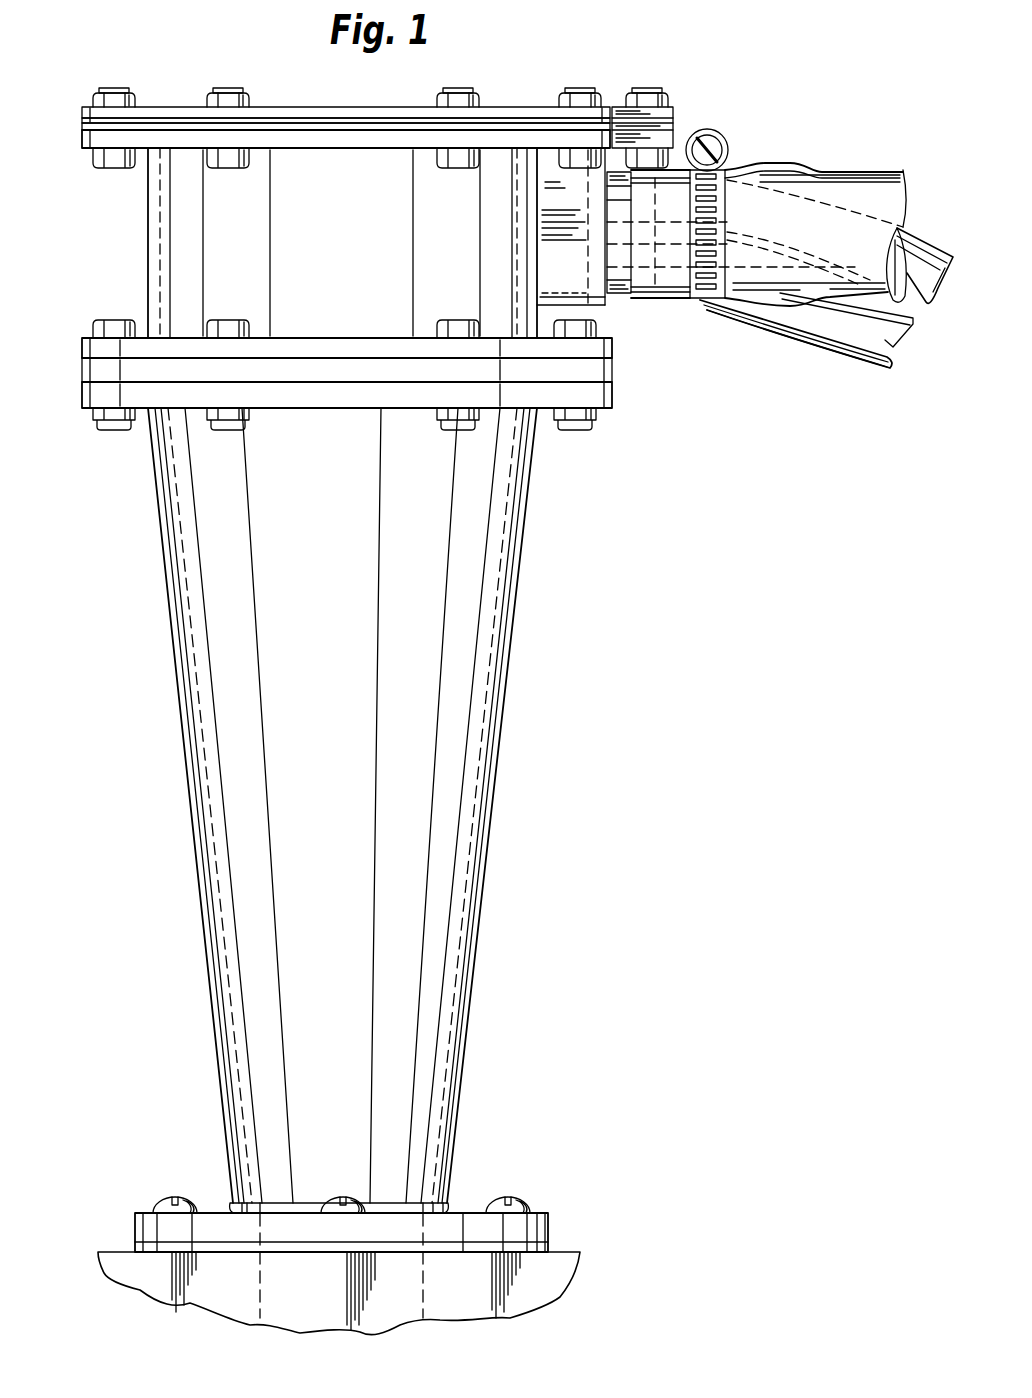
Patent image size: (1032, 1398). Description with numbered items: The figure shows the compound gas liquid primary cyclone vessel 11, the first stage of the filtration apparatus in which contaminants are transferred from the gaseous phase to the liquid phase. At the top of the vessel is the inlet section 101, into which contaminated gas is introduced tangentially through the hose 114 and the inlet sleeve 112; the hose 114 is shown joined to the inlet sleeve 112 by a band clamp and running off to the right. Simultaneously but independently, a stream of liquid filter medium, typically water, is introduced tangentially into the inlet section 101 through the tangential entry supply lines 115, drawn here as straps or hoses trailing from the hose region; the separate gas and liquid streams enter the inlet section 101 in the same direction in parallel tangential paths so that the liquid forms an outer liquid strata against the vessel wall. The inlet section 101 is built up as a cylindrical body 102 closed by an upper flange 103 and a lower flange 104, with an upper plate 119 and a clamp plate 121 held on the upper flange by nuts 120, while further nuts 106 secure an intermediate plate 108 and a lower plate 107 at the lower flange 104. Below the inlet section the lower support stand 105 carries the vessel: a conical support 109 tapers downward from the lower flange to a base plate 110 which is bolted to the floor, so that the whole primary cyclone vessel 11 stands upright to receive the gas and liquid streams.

The compound gas liquid primary cyclone vessel 11 is at (533, 84).
The inlet section 101 is at (78, 107).
The cylindrical body 102 is at (348, 288).
The upper flange 103 is at (290, 135).
The lower flange 104 is at (570, 355).
The lower support stand 105 is at (128, 1228).
The nuts 106 is at (225, 320).
The lower plate 107 is at (600, 395).
The intermediate plate 108 is at (196, 375).
The conical support 109 is at (323, 749).
The base plate 110 is at (550, 1213).
The inlet sleeve 112 is at (620, 233).
The hose 114 is at (878, 172).
The tangential entry supply line 115 is at (933, 303).
The upper plate 119 is at (385, 110).
The nuts 120 is at (225, 88).
The clamp plate 121 is at (655, 125).